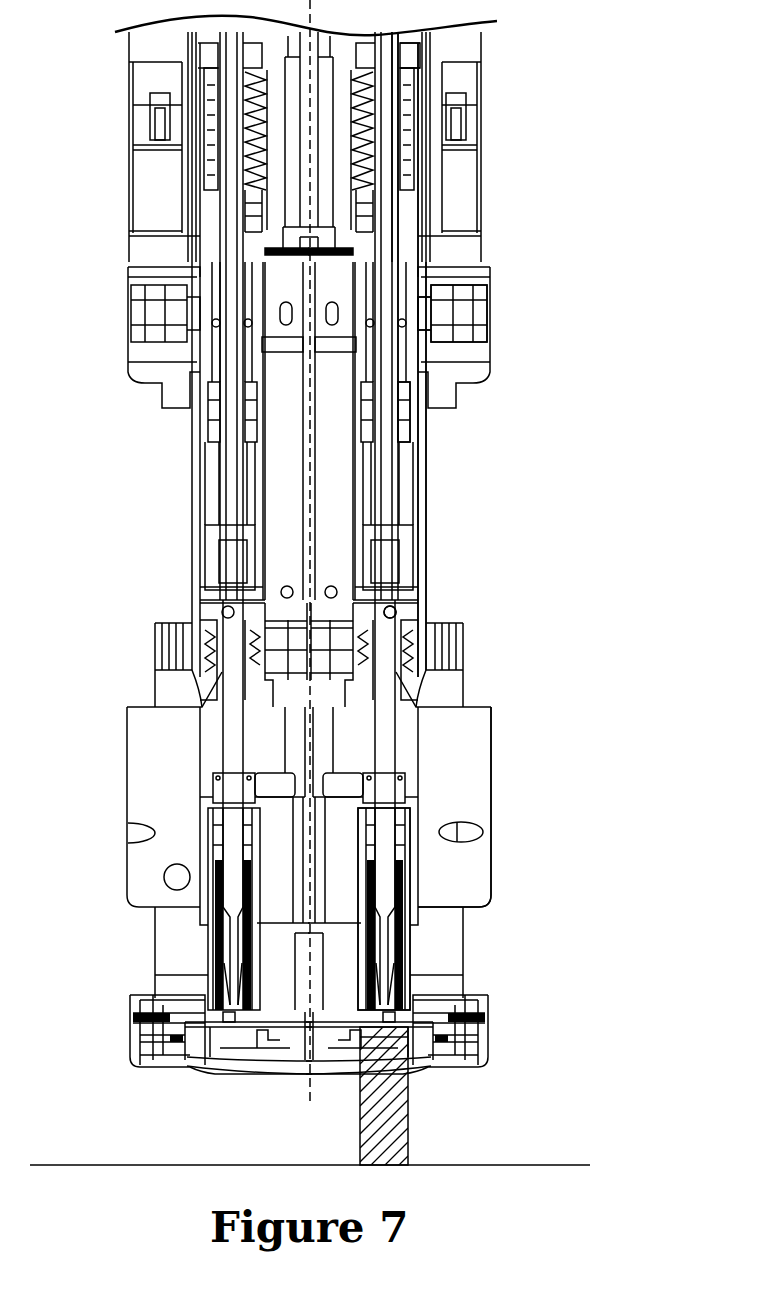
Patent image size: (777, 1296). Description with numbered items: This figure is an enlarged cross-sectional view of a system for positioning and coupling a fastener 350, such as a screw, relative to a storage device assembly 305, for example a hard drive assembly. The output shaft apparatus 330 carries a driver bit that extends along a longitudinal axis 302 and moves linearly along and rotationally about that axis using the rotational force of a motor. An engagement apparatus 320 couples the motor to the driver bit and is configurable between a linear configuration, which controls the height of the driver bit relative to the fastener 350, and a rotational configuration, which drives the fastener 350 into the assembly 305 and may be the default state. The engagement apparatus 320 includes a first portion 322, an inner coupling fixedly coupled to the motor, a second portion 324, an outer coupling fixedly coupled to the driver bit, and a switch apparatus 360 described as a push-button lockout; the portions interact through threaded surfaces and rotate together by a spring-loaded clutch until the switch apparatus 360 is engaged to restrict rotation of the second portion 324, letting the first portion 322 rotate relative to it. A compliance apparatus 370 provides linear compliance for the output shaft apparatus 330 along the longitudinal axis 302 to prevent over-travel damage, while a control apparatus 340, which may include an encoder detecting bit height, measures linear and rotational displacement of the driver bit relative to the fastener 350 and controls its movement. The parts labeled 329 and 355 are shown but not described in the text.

The longitudinal axis 302 is at (309, 1095).
The storage device assembly 305 is at (509, 1162).
The engagement apparatus 320 is at (440, 484).
The first portion 322 is at (410, 337).
The second portion 324 is at (405, 608).
The seal ring 329 is at (400, 403).
The output shaft apparatus 330 is at (484, 977).
The control apparatus 340 is at (422, 207).
The fastener 350 is at (412, 1095).
The nozzle tube 355 is at (390, 940).
The switch apparatus 360 is at (479, 313).
The compliance apparatus 370 is at (403, 118).